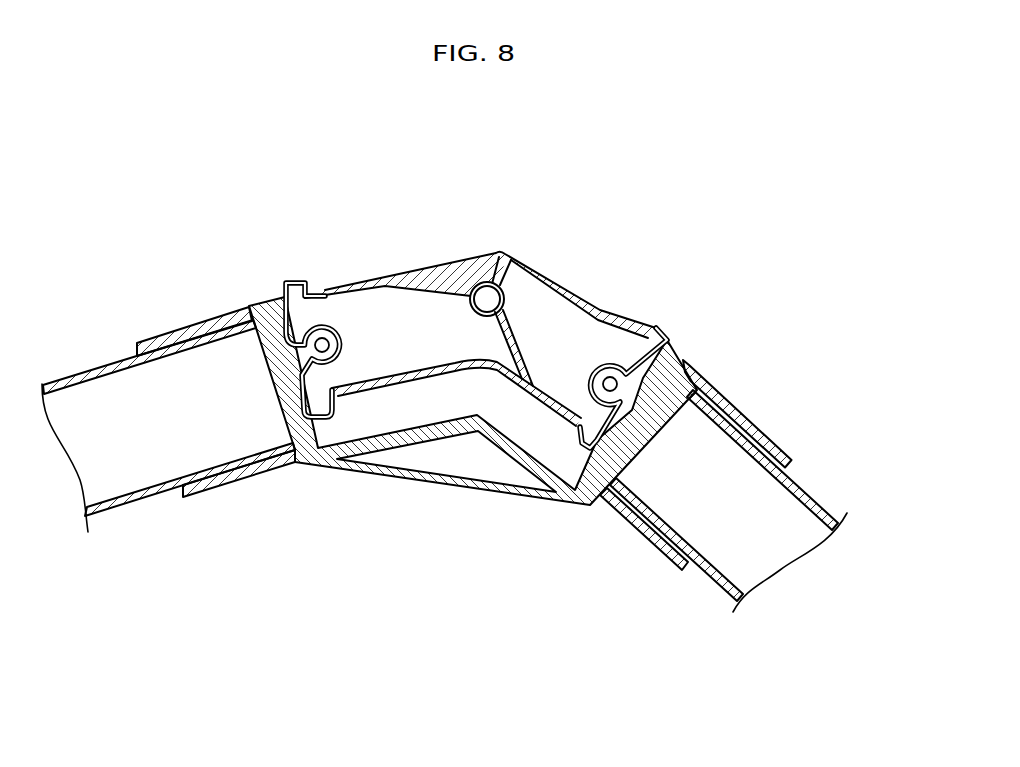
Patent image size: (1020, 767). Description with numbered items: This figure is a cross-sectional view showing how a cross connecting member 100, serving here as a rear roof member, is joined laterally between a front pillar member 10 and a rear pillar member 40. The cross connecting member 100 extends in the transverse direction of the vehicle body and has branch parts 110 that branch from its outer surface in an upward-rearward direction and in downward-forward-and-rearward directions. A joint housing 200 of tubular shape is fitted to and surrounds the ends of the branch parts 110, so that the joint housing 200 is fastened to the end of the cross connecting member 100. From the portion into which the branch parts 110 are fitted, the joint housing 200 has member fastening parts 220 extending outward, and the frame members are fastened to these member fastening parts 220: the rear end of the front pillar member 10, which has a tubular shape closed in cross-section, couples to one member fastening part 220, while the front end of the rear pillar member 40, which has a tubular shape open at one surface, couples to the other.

The front pillar member 10 is at (112, 365).
The rear pillar member 40 is at (815, 493).
The cross connecting member 100 is at (445, 254).
The branch parts 110 is at (348, 278).
The joint housing 200 is at (320, 463).
The member fastening parts 220 is at (200, 330).